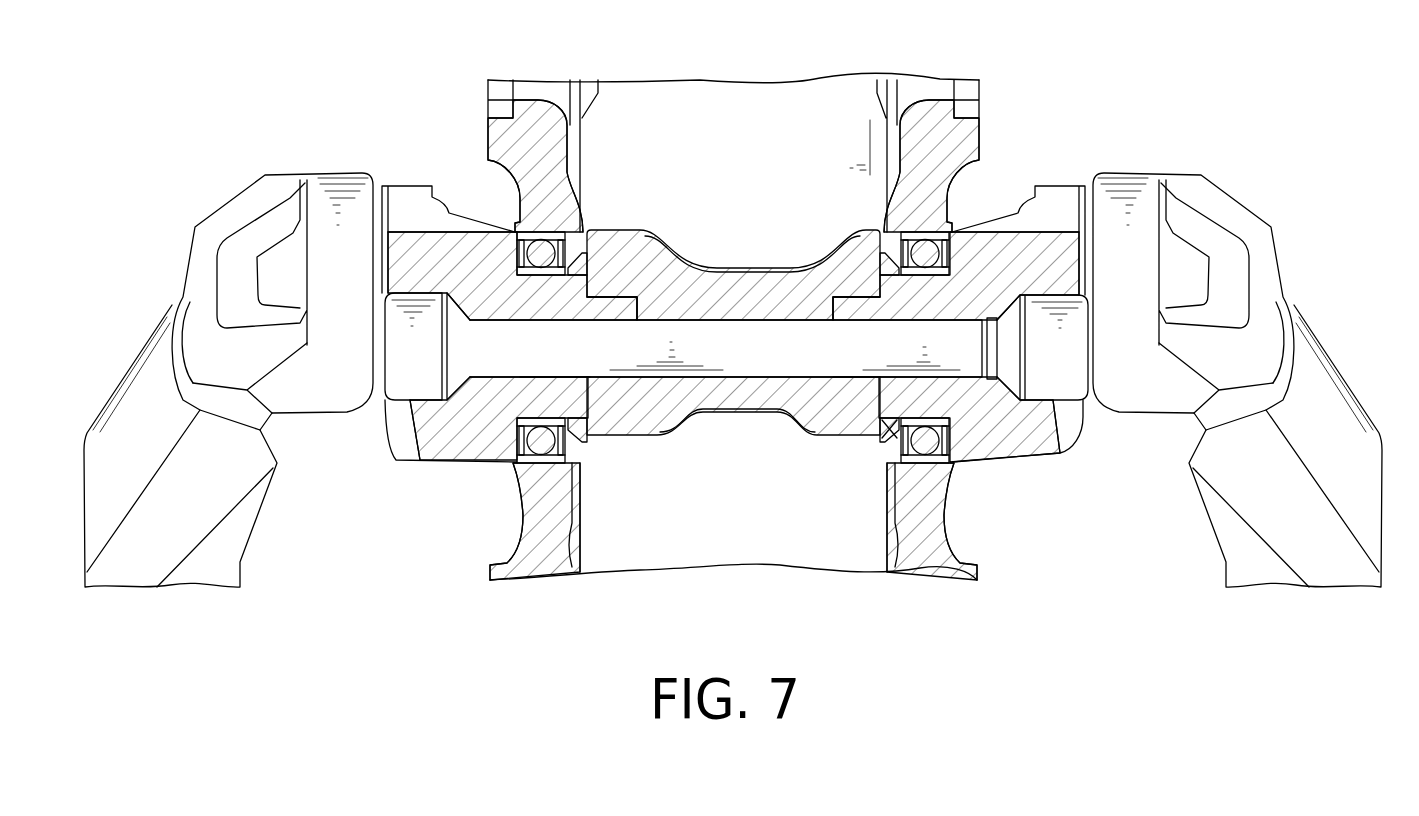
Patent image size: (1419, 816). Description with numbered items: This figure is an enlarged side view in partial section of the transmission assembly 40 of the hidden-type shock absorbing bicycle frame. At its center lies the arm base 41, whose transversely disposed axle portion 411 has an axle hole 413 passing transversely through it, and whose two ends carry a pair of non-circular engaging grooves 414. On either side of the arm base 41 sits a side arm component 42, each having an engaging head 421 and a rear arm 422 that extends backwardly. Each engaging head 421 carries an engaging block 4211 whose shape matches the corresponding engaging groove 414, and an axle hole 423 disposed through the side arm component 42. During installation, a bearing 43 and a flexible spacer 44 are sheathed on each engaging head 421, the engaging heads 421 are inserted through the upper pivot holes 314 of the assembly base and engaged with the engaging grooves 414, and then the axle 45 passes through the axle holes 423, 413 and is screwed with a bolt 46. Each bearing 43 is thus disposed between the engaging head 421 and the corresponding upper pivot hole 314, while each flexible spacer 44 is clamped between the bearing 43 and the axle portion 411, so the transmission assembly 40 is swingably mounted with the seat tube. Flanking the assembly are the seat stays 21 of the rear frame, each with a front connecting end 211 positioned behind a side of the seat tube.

The seat stay 21 is at (1212, 552).
The connecting end 211 is at (255, 192).
The transmission assembly 40 is at (406, 484).
The arm base 41 is at (733, 280).
The axle portion 411 is at (723, 290).
The axle hole 413 is at (845, 362).
The engaging groove 414 is at (620, 297).
The side arm component 42 is at (416, 178).
The engaging head 421 is at (538, 424).
The engaging block 4211 is at (858, 307).
The rear arm 422 is at (393, 418).
The axle hole 423 is at (552, 377).
The bearing 43 is at (927, 455).
The flexible spacer 44 is at (888, 432).
The axle 45 is at (745, 357).
The bolt 46 is at (1013, 335).
The upper pivot hole 314 is at (930, 240).